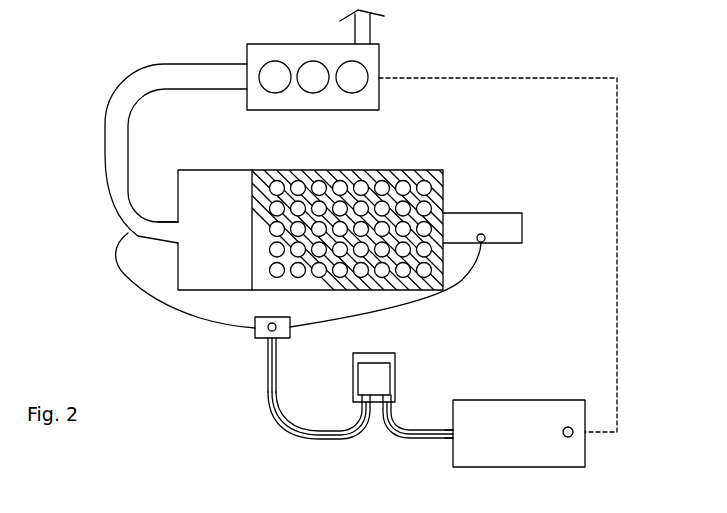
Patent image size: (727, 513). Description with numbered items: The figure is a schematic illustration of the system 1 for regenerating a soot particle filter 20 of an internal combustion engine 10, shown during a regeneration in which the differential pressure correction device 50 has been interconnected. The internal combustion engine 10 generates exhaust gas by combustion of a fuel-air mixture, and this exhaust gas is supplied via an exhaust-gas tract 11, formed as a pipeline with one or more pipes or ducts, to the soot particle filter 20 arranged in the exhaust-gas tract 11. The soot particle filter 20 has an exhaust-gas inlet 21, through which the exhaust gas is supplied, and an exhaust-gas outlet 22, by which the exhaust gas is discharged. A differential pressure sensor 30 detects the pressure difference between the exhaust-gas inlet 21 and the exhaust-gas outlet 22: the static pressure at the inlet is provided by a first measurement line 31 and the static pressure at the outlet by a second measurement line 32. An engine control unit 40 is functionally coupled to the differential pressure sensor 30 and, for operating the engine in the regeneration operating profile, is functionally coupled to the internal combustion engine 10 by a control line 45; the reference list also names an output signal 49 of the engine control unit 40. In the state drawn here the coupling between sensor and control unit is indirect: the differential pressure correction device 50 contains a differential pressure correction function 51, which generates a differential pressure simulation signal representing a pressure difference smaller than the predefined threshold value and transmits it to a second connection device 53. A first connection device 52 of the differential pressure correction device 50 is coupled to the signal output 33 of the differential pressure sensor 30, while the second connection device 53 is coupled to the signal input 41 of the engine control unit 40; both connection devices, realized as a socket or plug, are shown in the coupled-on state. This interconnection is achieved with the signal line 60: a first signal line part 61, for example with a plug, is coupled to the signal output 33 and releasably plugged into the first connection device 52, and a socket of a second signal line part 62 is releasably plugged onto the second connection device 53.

The system 1 is at (554, 56).
The internal combustion engine 10 is at (246, 35).
The exhaust-gas tract 11 is at (105, 120).
The soot particle filter 20 is at (424, 159).
The exhaust-gas inlet 21 is at (160, 210).
The exhaust-gas outlet 22 is at (481, 212).
The differential pressure sensor 30 is at (255, 337).
The first measurement line 31 is at (180, 310).
The second measurement line 32 is at (452, 293).
The signal output 33 is at (282, 340).
The engine control unit 40 is at (519, 400).
The signal input 41 is at (445, 440).
The control line 45 is at (618, 316).
The output signal of the engine control unit 49 is at (585, 437).
The differential pressure correction device 50 is at (396, 368).
The differential pressure correction function 51 is at (377, 363).
The first connection device 52 is at (355, 405).
The second connection device 53 is at (396, 404).
The signal line 60 is at (297, 397).
The first signal line part 61 is at (308, 438).
The second signal line part 62 is at (430, 428).